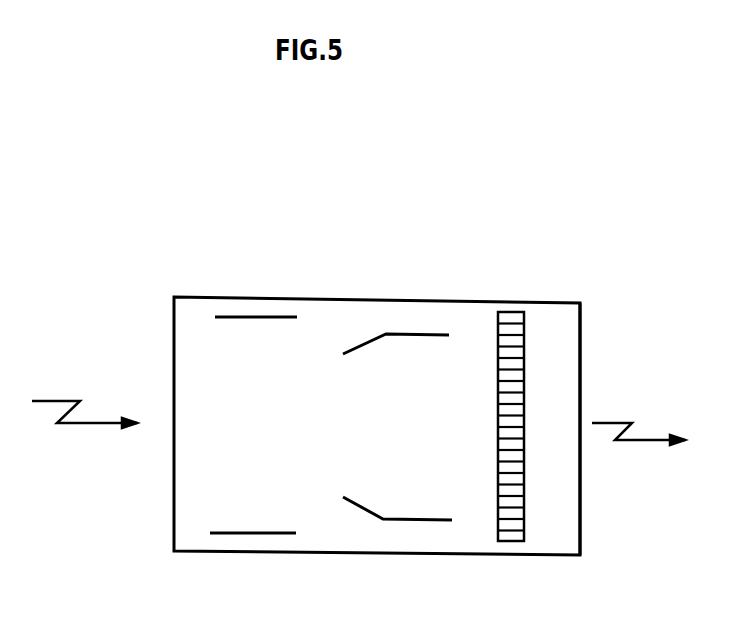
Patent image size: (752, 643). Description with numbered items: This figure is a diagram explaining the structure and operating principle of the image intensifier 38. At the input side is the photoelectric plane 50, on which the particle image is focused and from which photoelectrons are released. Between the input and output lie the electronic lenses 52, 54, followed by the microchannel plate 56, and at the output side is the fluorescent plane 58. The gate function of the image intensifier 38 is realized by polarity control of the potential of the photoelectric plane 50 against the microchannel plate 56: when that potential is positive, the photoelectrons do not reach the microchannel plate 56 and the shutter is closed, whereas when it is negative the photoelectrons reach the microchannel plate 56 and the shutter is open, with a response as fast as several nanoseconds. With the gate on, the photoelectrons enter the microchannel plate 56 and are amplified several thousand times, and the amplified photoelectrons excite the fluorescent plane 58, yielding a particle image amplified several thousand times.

The image intensifier 38 is at (693, 298).
The photoelectric plane 50 is at (172, 531).
The electronic lens 52 is at (262, 534).
The electronic lens 54 is at (375, 518).
The microchannel plate (MCP) 56 is at (498, 525).
The fluorescent plane 58 is at (580, 535).